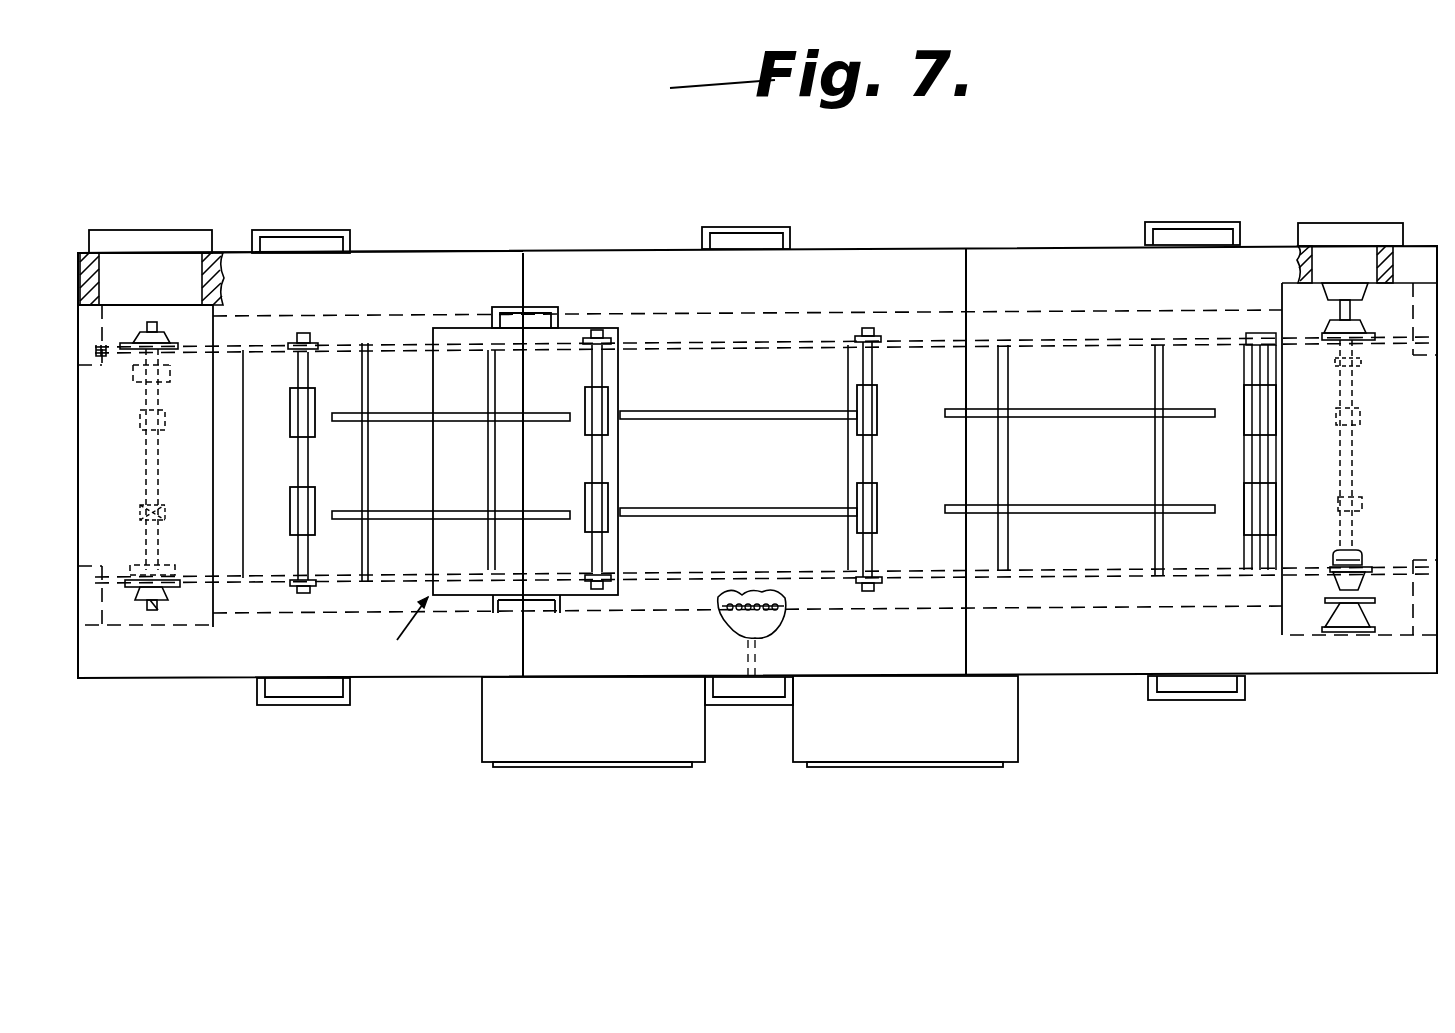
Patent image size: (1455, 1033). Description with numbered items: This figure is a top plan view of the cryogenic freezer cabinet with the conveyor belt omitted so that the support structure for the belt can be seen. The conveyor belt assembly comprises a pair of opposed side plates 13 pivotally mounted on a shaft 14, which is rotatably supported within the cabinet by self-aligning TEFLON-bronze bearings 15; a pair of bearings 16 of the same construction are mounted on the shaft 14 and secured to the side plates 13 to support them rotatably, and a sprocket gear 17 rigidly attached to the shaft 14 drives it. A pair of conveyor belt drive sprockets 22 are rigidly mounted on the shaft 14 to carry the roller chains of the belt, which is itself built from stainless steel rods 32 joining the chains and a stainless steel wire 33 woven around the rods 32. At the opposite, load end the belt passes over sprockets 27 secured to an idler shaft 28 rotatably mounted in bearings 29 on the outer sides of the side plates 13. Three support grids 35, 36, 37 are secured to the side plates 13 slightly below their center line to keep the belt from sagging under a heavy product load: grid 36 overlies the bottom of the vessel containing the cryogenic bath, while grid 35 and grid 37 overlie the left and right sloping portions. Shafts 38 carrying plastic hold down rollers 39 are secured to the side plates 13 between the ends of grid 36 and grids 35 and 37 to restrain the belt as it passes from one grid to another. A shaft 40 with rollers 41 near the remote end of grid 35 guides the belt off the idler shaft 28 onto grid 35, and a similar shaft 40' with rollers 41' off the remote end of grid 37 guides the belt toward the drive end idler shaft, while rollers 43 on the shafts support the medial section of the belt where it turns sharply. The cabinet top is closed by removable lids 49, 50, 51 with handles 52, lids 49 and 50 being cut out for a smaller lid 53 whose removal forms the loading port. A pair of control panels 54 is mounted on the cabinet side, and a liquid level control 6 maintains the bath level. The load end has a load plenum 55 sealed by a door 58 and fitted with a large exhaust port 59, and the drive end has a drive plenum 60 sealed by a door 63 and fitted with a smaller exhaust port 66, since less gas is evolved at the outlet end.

The liquid level control 6 is at (786, 628).
The side plates 13 is at (203, 346).
The shaft 14 is at (1350, 320).
The bearings 15 is at (1372, 292).
The bearings 16 is at (1338, 326).
The sprocket gear 17 is at (1368, 608).
The conveyor belt drive sprockets 22 is at (1336, 552).
The sprockets 27 is at (160, 380).
The idler shaft 28 is at (158, 612).
The bearings 29 is at (138, 322).
The rods 32 is at (397, 640).
The wire 33 is at (600, 370).
The support grid 35 is at (468, 515).
The support grid 36 is at (755, 514).
The support grid 37 is at (1108, 490).
The shafts 38 is at (597, 381).
The hold down rollers 39 is at (600, 422).
The shaft 40 is at (318, 463).
The shaft 40' is at (1233, 451).
The rollers 41 is at (282, 461).
The rollers 41' is at (1227, 460).
The rollers 43 is at (165, 428).
The lid 49 is at (458, 252).
The lid 50 is at (672, 252).
The lid 51 is at (1086, 250).
The handles 52 is at (352, 232).
The lid 53 is at (452, 328).
The control panels 54 is at (648, 770).
The load plenum 55 is at (136, 478).
The door 58 is at (76, 540).
The exhaust port 59 is at (152, 250).
The drive plenum 60 is at (1428, 425).
The door 63 is at (1440, 518).
The exhaust port 66 is at (1355, 226).